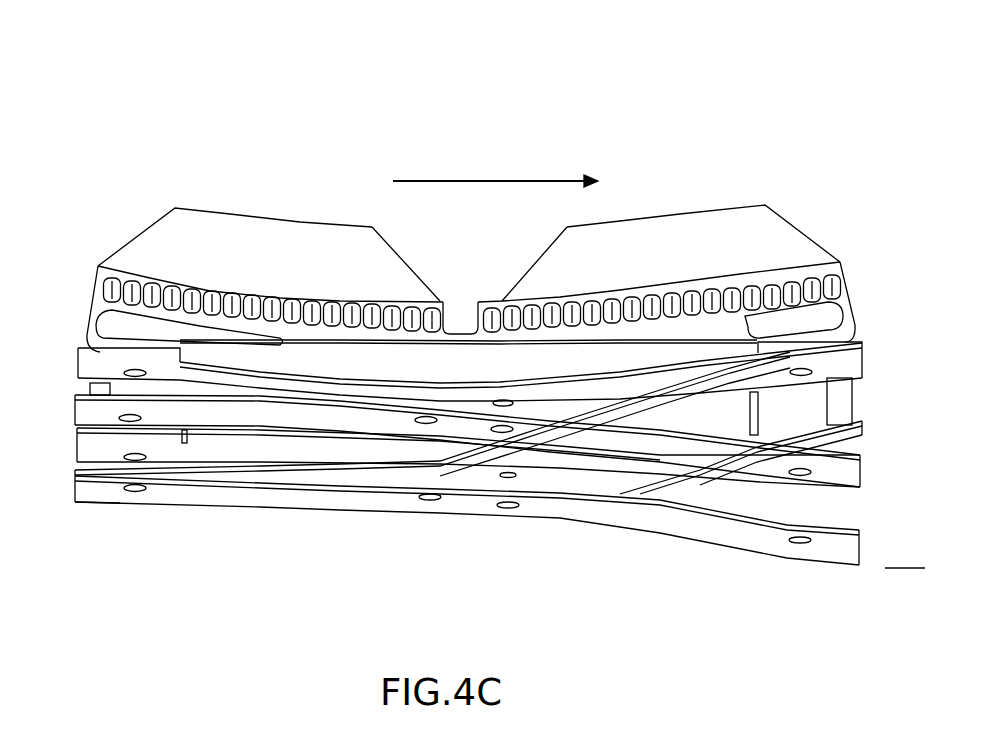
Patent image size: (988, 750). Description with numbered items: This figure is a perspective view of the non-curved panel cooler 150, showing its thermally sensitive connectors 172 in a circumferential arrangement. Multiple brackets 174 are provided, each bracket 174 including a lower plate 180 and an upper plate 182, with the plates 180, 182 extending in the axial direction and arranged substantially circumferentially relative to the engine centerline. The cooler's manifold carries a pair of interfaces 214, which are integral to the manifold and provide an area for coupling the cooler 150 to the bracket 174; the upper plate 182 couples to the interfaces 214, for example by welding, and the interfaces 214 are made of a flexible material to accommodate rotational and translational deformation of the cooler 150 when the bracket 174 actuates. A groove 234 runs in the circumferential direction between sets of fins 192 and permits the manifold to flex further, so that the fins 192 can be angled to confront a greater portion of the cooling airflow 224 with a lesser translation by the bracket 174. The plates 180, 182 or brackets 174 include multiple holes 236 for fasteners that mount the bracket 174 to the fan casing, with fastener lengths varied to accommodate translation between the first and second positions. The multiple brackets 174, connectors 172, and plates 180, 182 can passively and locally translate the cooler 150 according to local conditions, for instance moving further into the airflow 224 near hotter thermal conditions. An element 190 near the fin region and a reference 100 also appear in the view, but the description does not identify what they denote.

The wearable device 100 is at (905, 555).
The panel cooler 150 is at (227, 75).
The thermally sensitive connectors 172 is at (762, 624).
The bracket 174 is at (860, 504).
The lower plate 180 is at (757, 475).
The upper plate 182 is at (628, 397).
The slotted body 190 is at (838, 283).
The fins 192 is at (793, 238).
The interfaces 214 is at (128, 344).
The cooling airflow 224 is at (486, 178).
The groove 234 is at (460, 285).
The holes 236 is at (795, 371).